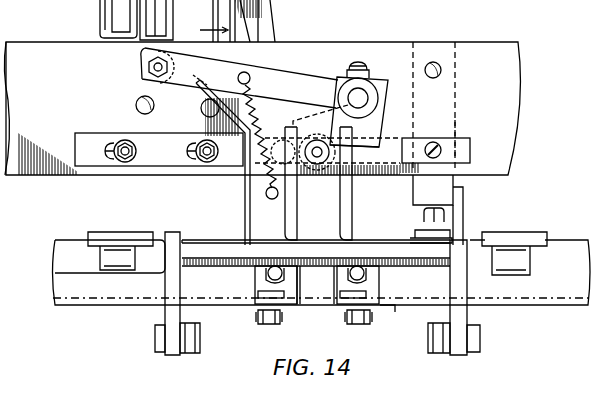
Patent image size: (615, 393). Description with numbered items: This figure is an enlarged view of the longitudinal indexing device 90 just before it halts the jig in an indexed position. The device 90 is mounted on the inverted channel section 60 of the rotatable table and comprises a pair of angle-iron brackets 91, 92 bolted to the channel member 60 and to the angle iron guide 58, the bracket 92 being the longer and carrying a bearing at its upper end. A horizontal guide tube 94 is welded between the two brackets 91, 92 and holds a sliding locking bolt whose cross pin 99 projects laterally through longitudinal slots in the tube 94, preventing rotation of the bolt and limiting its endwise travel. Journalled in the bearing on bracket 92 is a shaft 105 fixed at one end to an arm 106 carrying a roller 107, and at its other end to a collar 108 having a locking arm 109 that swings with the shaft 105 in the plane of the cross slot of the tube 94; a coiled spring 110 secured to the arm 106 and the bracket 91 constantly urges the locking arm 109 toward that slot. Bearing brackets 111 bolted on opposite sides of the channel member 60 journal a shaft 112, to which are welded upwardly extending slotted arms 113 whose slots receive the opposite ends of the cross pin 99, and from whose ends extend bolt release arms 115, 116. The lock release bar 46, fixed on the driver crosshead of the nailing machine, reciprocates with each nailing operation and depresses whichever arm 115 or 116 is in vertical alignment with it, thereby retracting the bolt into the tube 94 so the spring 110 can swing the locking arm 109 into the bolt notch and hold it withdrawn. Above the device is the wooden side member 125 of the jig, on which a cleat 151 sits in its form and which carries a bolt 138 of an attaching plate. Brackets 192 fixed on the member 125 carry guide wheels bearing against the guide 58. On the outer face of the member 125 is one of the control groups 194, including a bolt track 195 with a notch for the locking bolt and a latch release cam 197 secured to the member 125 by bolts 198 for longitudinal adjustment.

The lock release bar 46 is at (118, 12).
The wooden side member 125 is at (58, 55).
The cleat 151 is at (270, 22).
The roller 107 is at (141, 63).
The arm 106 is at (278, 80).
The collar 108 is at (368, 87).
The shaft 105 is at (358, 98).
The locking arm 109 is at (368, 137).
The brackets 192 is at (457, 84).
The bolt track 195 is at (464, 128).
The bolt 138 is at (137, 106).
The latch release cam 197 is at (202, 106).
The bolts 198 is at (190, 151).
The control groups 194 is at (205, 183).
The coiled spring 110 is at (262, 178).
The cross pin 99 is at (373, 150).
The horizontal guide tube 94 is at (323, 170).
The slotted arms 113 is at (290, 228).
The shaft 112 is at (207, 251).
The longitudinal indexing device 90 is at (520, 186).
The angle iron guide 58 is at (569, 247).
The bolt release arm 115 is at (118, 258).
The bolt release arm 116 is at (529, 262).
The bearing brackets 111 is at (172, 283).
The angle-iron bracket 91 is at (297, 282).
The angle-iron bracket 92 is at (368, 287).
The inverted channel section 60 is at (390, 312).